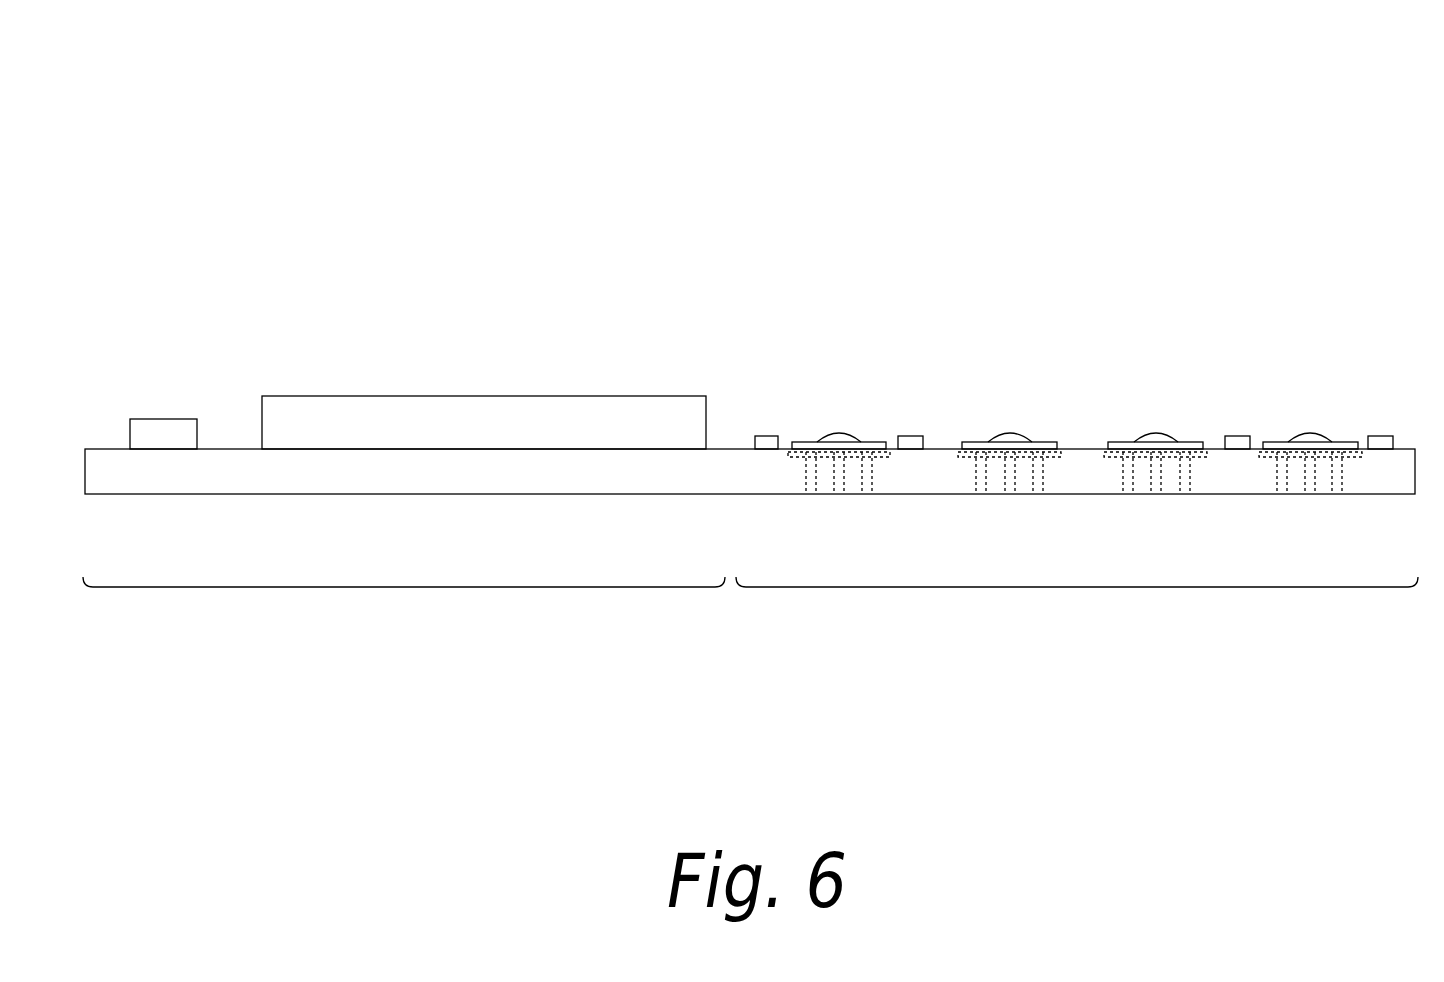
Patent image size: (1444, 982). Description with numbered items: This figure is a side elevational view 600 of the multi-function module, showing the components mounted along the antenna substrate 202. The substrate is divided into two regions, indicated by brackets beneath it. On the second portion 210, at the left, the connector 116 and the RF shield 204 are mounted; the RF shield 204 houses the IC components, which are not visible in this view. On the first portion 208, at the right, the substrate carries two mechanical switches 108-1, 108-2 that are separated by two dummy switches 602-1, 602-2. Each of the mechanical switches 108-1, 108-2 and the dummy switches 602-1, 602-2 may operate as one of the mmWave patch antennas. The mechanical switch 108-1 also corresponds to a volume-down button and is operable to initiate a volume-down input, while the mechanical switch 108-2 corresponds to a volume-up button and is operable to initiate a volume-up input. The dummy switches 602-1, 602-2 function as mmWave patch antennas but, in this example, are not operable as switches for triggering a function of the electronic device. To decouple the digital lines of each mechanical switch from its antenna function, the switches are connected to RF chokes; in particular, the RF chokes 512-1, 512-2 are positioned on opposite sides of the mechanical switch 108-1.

The side elevational view 600 is at (160, 34).
The antenna substrate 202 is at (483, 494).
The connector 116 is at (162, 418).
The RF shield 204 is at (484, 396).
The RF choke 512-1 is at (763, 436).
The RF choke 512-2 is at (913, 436).
The mechanical switch 108-1 is at (857, 407).
The mechanical switch 108-2 is at (1328, 407).
The dummy switch 602-1 is at (1032, 407).
The dummy switch 602-2 is at (1175, 407).
The second portion of the antenna substrate 210 is at (404, 604).
The first portion of the antenna substrate 208 is at (1077, 604).